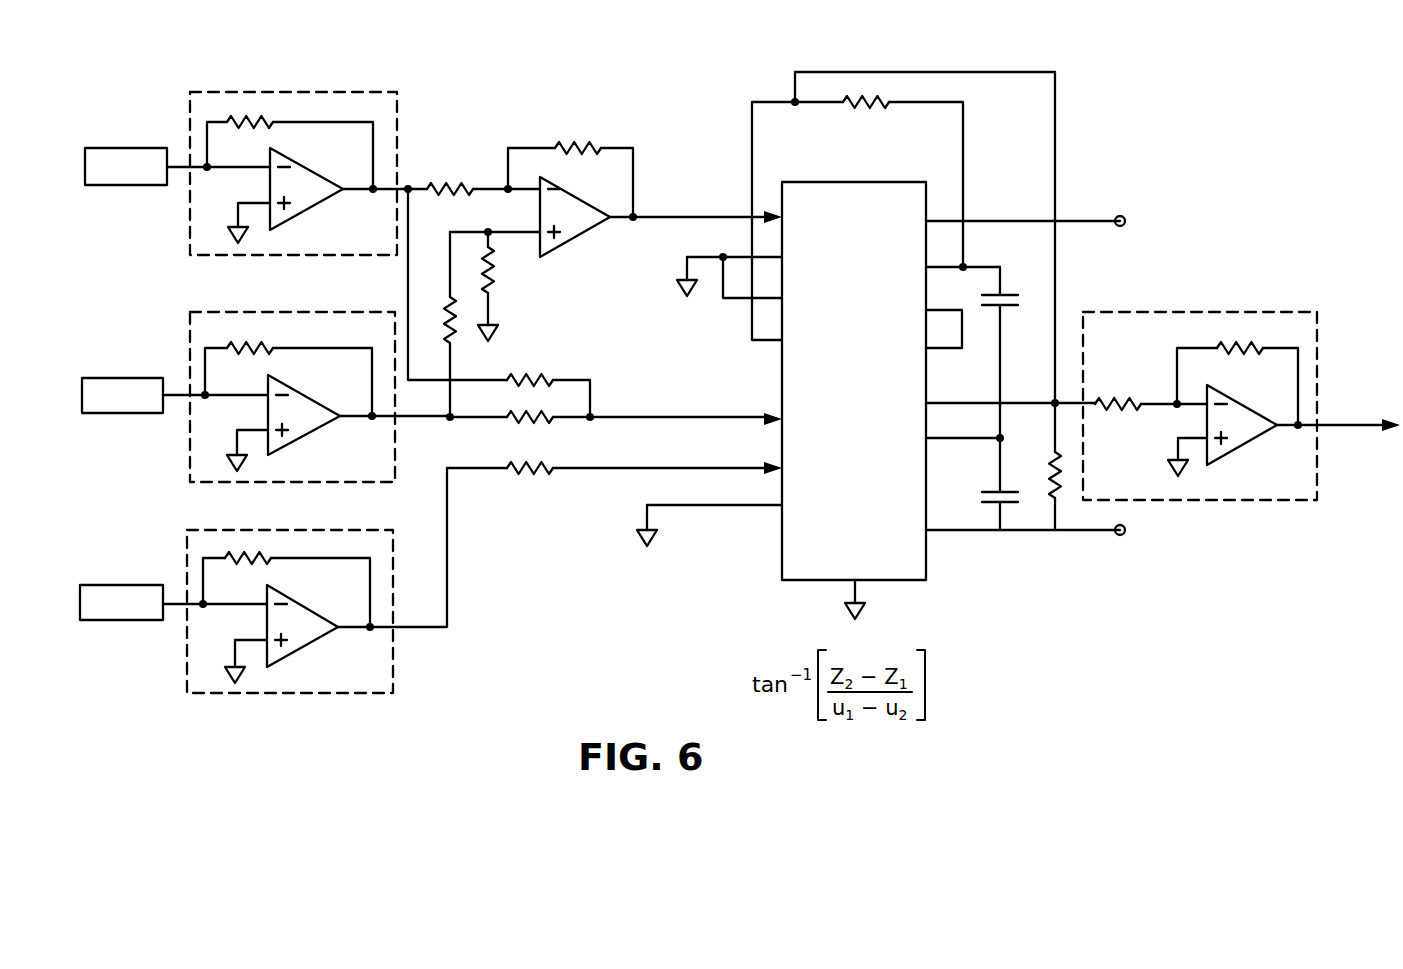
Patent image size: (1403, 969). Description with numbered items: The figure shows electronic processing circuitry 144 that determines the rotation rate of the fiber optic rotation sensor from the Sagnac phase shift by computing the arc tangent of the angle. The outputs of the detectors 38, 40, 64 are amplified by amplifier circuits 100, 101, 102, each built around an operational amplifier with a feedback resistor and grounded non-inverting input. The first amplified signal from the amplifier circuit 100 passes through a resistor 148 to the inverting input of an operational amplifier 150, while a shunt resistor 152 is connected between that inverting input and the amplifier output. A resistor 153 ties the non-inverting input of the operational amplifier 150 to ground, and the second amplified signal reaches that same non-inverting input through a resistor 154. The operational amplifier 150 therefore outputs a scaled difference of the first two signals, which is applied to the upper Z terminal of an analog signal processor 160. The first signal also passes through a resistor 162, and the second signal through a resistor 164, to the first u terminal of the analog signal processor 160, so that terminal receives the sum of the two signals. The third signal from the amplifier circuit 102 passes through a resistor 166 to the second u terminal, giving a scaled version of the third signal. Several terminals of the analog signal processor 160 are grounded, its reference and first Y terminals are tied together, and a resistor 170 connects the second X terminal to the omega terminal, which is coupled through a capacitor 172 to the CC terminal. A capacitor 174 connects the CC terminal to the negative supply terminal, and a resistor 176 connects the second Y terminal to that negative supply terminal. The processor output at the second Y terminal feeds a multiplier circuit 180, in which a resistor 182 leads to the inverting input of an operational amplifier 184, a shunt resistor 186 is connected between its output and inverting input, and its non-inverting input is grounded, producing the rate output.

The detector 38 is at (140, 148).
The second detector 40 is at (128, 378).
The third detector 64 is at (133, 585).
The amplifier circuit 100 is at (343, 92).
The amplifier circuit 101 is at (393, 420).
The amplifier circuit 102 is at (395, 660).
The electronic processing circuitry 144 is at (1218, 166).
The resistor 148 is at (460, 189).
The operational amplifier 150 is at (580, 236).
The shunt resistor 152 is at (588, 148).
The resistor 153 is at (500, 287).
The resistor 154 is at (445, 320).
The analog signal processor 160 is at (780, 538).
The resistor 162 is at (533, 380).
The resistor 164 is at (540, 405).
The resistor 166 is at (523, 470).
The resistor 170 is at (865, 105).
The capacitor 172 is at (1010, 292).
The capacitor 174 is at (1007, 503).
The resistor 176 is at (1060, 483).
The multiplier circuit 180 is at (1258, 312).
The resistor 182 is at (1127, 404).
The operational amplifier 184 is at (1248, 438).
The feedback resistor 186 is at (1245, 347).